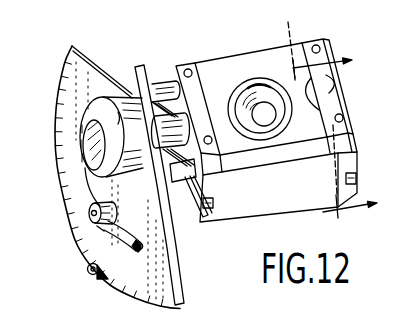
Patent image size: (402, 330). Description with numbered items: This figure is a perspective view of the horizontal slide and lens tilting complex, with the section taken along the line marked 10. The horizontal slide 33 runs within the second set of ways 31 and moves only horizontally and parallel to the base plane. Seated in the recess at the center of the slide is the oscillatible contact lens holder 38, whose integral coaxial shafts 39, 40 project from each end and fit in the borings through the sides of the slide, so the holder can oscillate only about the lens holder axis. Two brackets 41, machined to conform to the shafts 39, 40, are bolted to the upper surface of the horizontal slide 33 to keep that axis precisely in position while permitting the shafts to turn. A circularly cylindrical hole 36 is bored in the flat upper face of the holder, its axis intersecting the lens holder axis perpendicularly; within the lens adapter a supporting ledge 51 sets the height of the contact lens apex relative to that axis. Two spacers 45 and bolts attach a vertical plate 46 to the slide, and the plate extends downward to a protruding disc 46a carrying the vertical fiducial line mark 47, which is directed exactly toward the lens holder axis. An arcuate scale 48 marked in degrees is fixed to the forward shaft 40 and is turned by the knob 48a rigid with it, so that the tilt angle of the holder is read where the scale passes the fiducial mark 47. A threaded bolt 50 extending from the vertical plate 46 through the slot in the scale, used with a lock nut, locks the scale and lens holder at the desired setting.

The section line 10- 10 is at (345, 120).
The second set of ways 31 is at (214, 201).
The horizontal slide 33 is at (276, 200).
The circularly cylindrical hole 36 is at (252, 84).
The contact lens holder 38 is at (215, 78).
The shaft 39 is at (334, 80).
The shaft 40 is at (136, 104).
The brackets 41 is at (184, 64).
The spacers 45 is at (160, 84).
The vertical plate 46 is at (180, 243).
The protruding disc 46a is at (100, 281).
The vertical fiducial line mark 47 is at (91, 269).
The arcuate scale 48 is at (58, 146).
The knob 48a is at (123, 121).
The threaded bolt 50 is at (88, 212).
The supporting ledge 51 is at (99, 229).